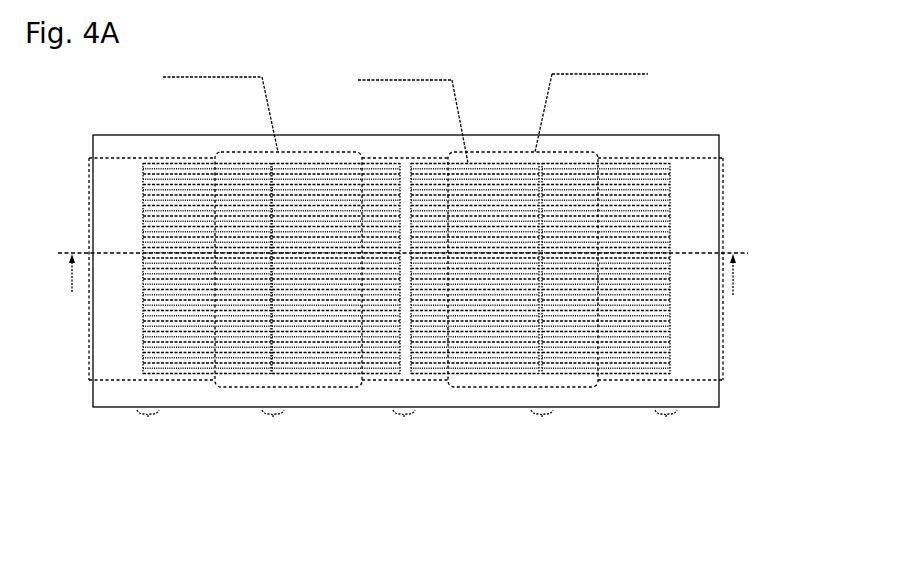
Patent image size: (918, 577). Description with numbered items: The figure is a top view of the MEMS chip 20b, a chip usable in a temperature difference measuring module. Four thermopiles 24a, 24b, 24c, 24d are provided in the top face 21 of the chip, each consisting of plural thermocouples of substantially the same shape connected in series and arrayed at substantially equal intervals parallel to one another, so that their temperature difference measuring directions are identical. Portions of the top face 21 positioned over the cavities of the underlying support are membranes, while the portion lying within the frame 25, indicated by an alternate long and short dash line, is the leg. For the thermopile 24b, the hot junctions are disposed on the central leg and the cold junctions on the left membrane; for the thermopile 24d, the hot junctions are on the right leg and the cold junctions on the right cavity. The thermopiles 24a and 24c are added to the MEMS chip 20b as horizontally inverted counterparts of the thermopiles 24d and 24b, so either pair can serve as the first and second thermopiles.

The MEMS chip 20b is at (702, 110).
The top face 21 is at (707, 149).
The thermopile 24a is at (270, 127).
The thermopile 24b is at (400, 127).
The thermopile 24c is at (540, 127).
The thermopile 24d is at (668, 127).
The frame 25 is at (100, 382).